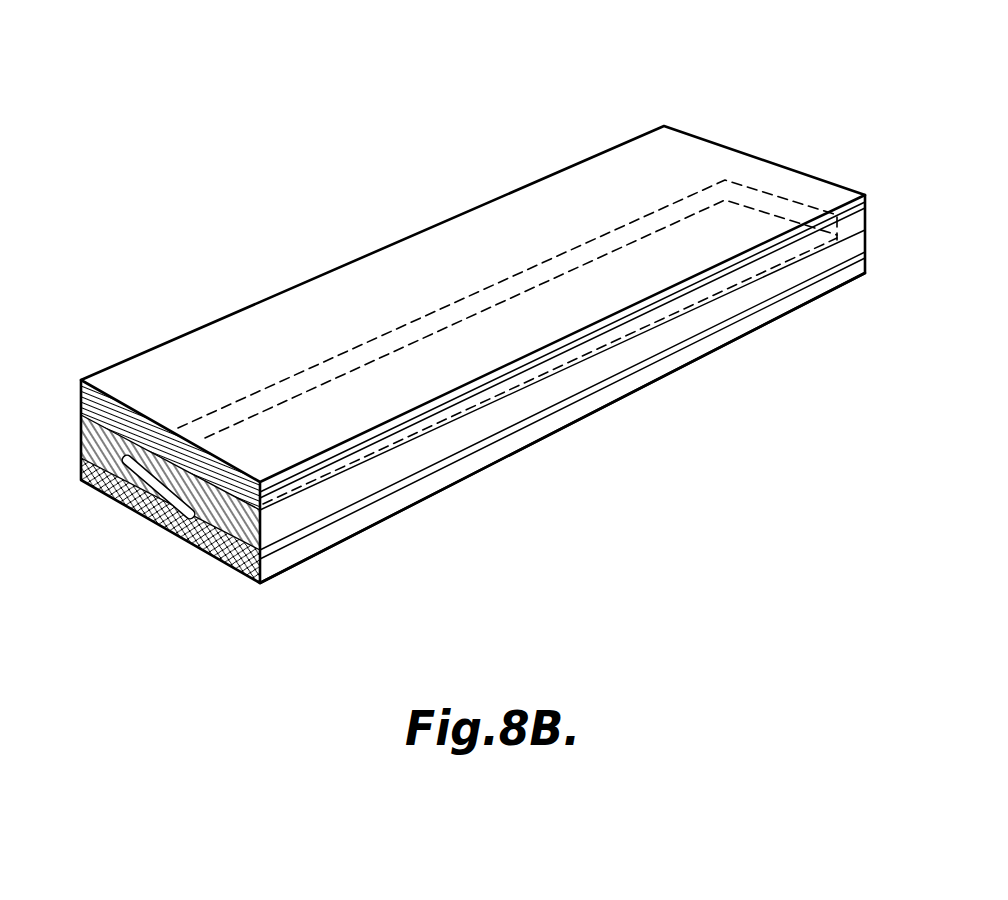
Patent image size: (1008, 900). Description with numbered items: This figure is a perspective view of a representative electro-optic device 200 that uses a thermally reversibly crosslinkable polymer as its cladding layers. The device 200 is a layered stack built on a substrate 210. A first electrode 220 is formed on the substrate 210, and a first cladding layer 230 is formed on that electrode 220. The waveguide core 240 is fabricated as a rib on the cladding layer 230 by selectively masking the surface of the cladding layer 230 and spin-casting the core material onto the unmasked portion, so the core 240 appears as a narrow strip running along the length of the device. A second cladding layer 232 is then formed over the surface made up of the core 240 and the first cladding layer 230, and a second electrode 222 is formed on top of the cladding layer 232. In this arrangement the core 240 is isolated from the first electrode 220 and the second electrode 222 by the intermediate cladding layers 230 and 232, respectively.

The electro-optic device 200 is at (752, 82).
The second electrode 222 is at (683, 150).
The cladding layer 232 is at (677, 310).
The cladding layer 230 is at (633, 355).
The first electrode 220 is at (598, 392).
The substrate 210 is at (527, 437).
The core 240 is at (402, 322).